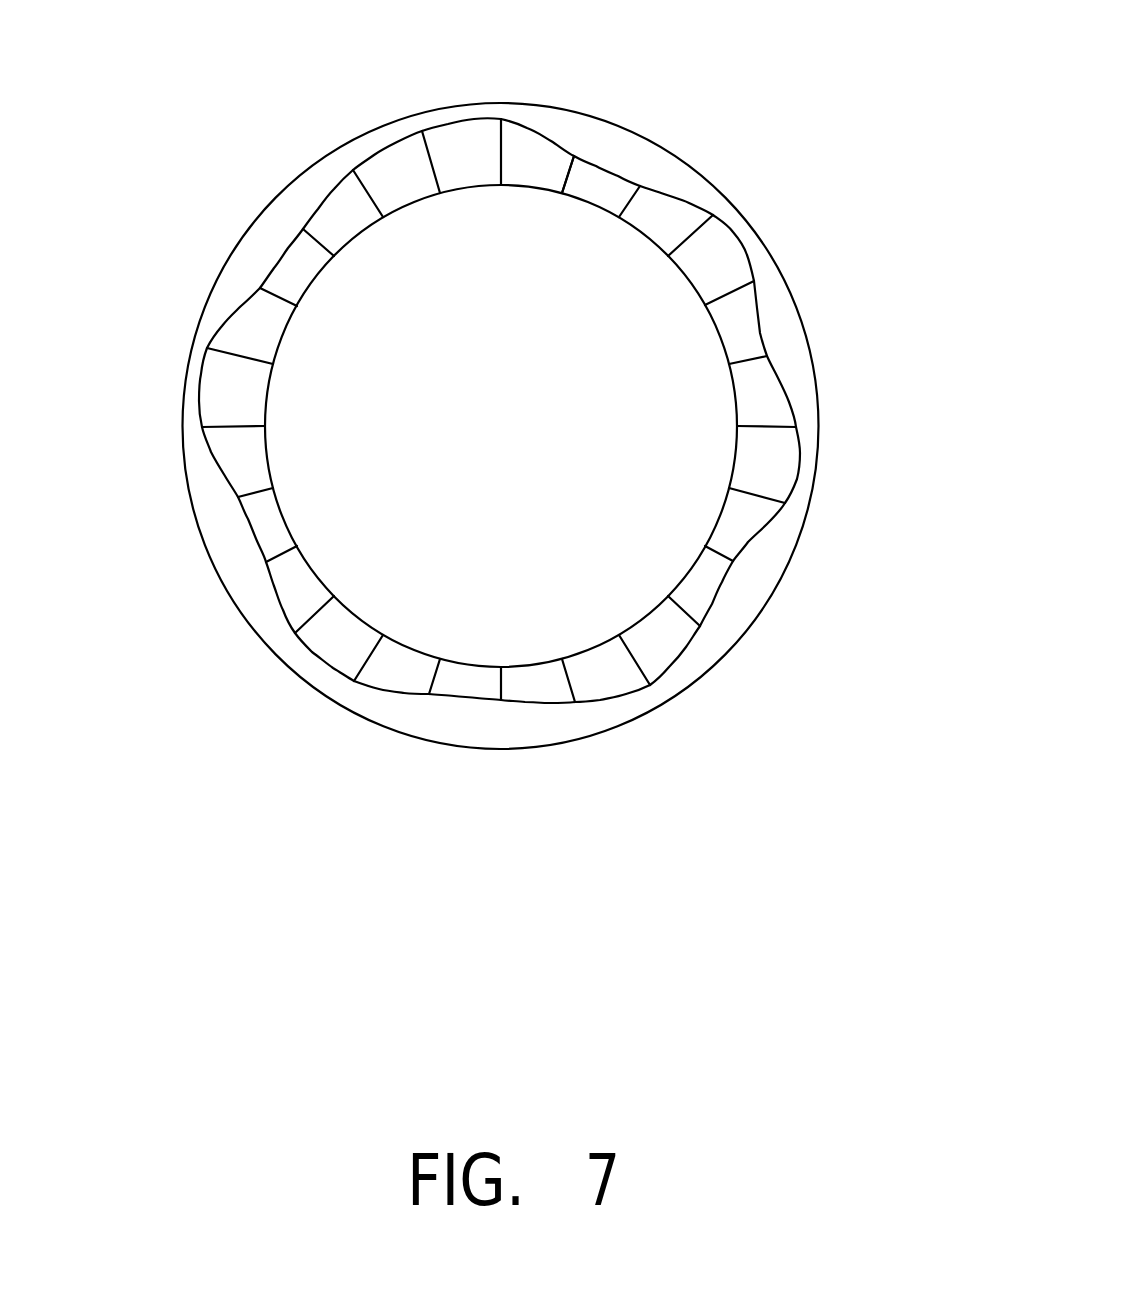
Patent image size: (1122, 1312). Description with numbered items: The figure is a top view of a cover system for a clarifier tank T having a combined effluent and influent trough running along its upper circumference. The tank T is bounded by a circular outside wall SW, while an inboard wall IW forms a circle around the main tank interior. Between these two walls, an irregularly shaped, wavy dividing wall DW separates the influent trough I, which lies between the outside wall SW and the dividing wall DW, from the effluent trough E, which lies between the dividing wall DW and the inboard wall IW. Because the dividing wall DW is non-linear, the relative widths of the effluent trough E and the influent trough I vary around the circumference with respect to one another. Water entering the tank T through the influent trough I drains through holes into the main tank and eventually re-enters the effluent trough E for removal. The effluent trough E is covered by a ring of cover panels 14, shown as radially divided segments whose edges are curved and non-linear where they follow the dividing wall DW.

The outside wall SW is at (750, 222).
The dividing wall DW is at (547, 137).
The inboard wall IW is at (356, 236).
The cover panels 14 is at (256, 333).
The effluent trough E is at (613, 196).
The influent trough I is at (773, 302).
The clarifier tank T is at (504, 405).